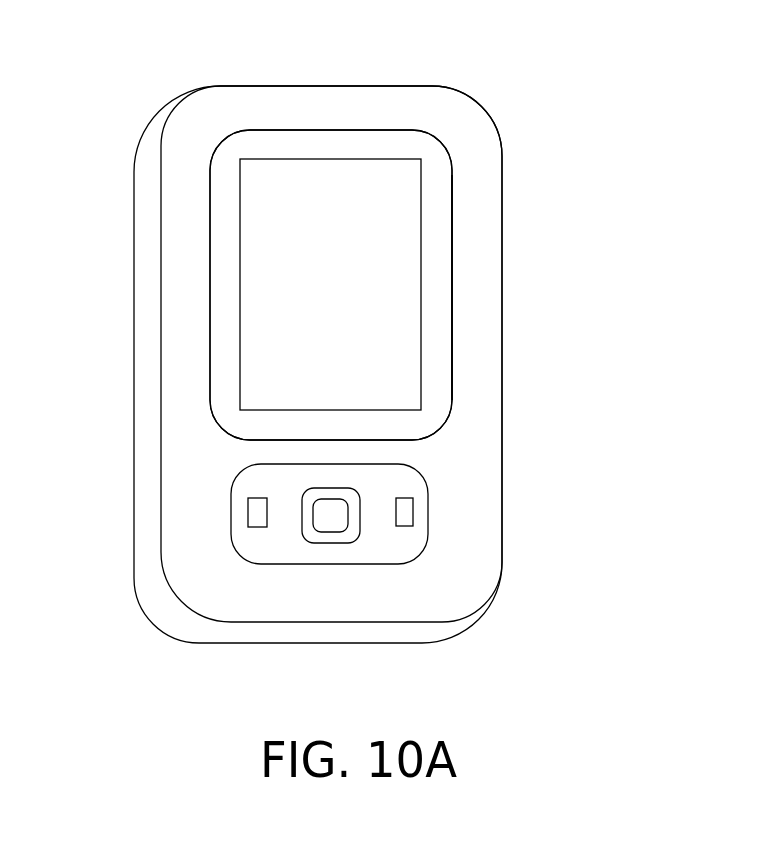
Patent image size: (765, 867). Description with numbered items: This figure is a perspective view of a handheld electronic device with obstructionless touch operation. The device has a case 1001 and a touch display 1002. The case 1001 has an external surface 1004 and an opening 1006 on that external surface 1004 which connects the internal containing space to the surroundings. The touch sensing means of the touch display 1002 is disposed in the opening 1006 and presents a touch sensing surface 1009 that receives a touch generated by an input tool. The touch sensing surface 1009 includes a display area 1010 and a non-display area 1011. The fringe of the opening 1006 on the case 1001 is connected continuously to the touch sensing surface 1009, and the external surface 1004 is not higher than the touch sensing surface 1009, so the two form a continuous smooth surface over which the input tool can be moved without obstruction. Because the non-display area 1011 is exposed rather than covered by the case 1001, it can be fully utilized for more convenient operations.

The case 1001 is at (465, 522).
The touch display 1002 is at (452, 381).
The external surface 1004 is at (197, 485).
The opening 1006 is at (452, 243).
The touch sensing surface 1009 is at (433, 175).
The display area 1010 is at (357, 187).
The non-display area 1011 is at (294, 146).